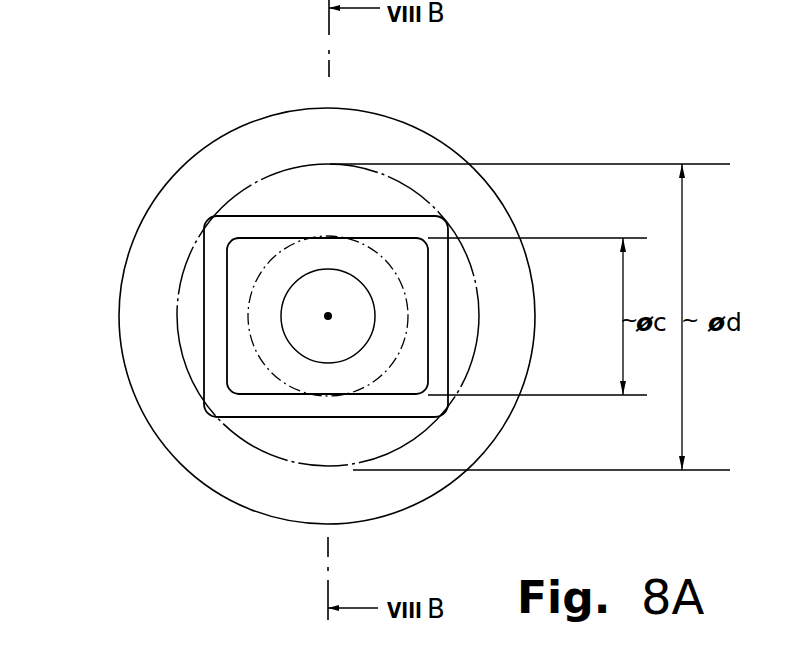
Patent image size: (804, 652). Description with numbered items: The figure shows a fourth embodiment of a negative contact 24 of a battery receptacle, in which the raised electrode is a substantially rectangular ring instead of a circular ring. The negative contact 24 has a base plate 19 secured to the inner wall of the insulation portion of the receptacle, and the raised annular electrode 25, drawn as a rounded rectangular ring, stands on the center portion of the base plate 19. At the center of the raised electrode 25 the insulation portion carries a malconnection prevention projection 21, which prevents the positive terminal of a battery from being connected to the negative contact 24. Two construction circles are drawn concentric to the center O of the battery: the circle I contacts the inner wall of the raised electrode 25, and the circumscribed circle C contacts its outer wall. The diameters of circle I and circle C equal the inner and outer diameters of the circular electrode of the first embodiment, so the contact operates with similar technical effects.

The base plate 19 is at (282, 133).
The malconnection prevention projection 21 is at (303, 335).
The negative contact 24 is at (458, 122).
The raised annular electrode 25 is at (217, 292).
The circumscribed circle C is at (245, 187).
The center of the battery O is at (330, 316).
The circle I is at (294, 391).